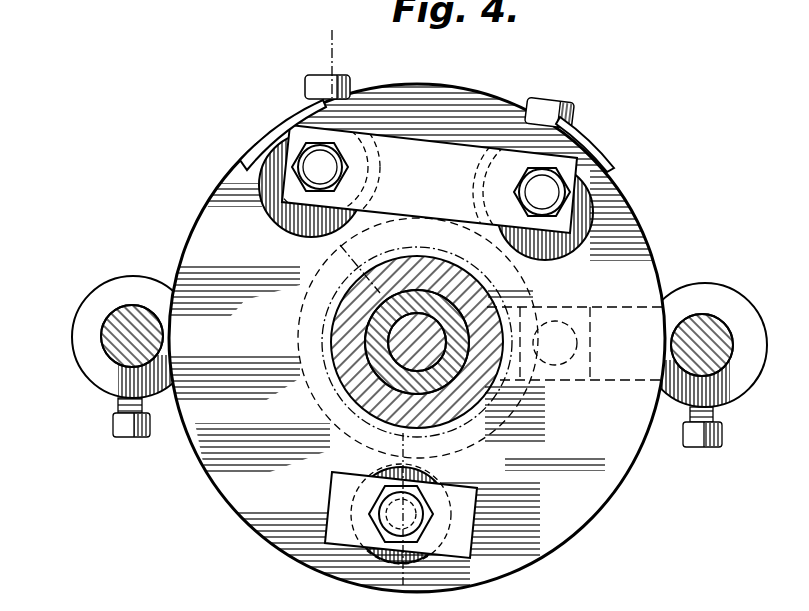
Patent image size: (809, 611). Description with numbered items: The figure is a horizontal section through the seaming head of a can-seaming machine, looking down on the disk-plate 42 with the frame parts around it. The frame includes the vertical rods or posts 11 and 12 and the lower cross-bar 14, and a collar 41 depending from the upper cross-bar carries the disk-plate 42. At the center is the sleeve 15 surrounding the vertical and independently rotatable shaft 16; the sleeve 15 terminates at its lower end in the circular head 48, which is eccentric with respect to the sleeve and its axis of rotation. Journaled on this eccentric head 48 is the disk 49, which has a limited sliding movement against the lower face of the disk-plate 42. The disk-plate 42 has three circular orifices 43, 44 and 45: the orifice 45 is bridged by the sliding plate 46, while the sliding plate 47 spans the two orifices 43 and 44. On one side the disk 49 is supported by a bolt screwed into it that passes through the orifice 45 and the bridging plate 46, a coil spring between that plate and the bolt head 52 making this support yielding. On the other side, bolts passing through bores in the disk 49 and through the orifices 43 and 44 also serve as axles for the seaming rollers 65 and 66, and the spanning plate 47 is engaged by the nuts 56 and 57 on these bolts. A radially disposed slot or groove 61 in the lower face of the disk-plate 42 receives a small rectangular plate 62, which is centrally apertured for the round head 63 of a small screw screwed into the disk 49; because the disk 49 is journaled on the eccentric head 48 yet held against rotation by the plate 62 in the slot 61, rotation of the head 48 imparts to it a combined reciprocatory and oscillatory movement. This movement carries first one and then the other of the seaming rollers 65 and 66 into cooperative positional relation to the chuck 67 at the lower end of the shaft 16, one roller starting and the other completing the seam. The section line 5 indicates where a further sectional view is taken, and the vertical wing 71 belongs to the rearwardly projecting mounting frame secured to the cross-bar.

The section line 5- 5 is at (368, 50).
The vertical rod or post 11 is at (120, 348).
The vertical rod or post 12 is at (710, 328).
The lower cross-bar 14 is at (728, 390).
The sleeve 15 is at (467, 307).
The vertical shaft 16 is at (430, 365).
The collar 41 is at (355, 352).
The disk-plate 42 is at (632, 252).
The circular orifice 43 is at (268, 214).
The circular orifice 44 is at (563, 255).
The circular orifice 45 is at (382, 567).
The sliding plate 46 is at (338, 490).
The sliding plate 47 is at (435, 184).
The circular head 48 is at (372, 386).
The disk 49 is at (268, 159).
The bolt head 52 is at (415, 510).
The nut 56 is at (330, 150).
The nut 57 is at (550, 190).
The radially disposed slot or groove 61 is at (621, 381).
The small rectangular plate 62 is at (598, 359).
The round head 63 is at (576, 338).
The seaming roller 65 is at (280, 121).
The seaming roller 66 is at (572, 143).
The chuck 67 is at (465, 452).
The vertical wing 71 is at (436, 246).